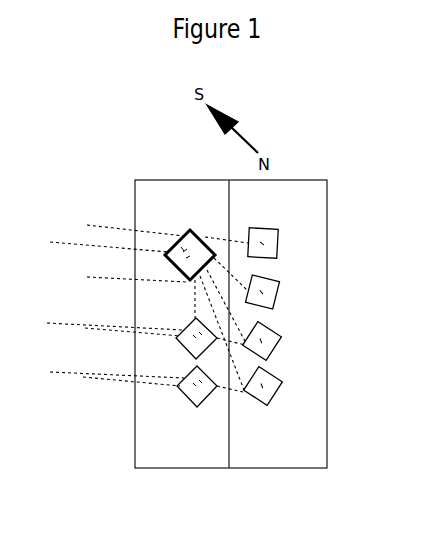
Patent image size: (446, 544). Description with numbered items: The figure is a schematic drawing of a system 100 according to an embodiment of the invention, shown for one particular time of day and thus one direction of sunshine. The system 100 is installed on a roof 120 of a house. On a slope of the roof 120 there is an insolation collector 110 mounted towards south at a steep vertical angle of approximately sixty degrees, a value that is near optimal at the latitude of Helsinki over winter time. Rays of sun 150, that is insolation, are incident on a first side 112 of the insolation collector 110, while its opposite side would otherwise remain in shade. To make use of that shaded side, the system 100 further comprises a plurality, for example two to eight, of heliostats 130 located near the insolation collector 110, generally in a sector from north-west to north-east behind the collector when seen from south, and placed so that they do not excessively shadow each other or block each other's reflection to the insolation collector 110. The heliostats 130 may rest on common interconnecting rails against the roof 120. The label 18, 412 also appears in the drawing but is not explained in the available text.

The system 100 is at (110, 99).
The insolation collector 110 is at (192, 230).
The first side 112 is at (183, 255).
The roof 120 is at (297, 447).
The heliostats 130 is at (192, 400).
The rays of sun 150 is at (90, 243).
The magnetic field source 18 is at (117, 377).
The magnetic field source 412 is at (117, 377).